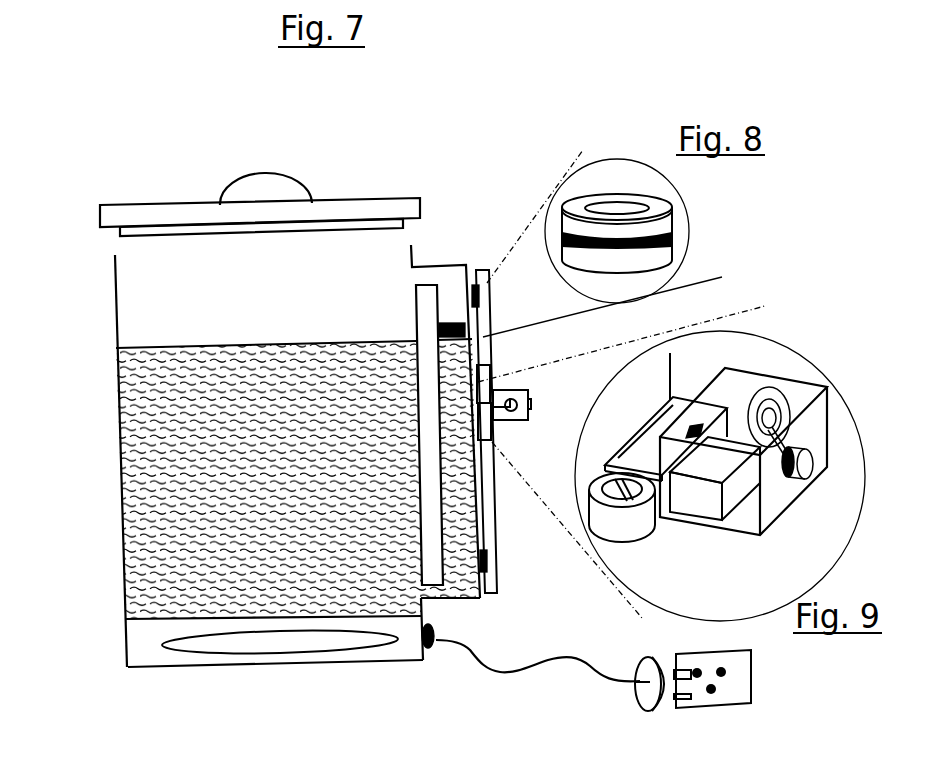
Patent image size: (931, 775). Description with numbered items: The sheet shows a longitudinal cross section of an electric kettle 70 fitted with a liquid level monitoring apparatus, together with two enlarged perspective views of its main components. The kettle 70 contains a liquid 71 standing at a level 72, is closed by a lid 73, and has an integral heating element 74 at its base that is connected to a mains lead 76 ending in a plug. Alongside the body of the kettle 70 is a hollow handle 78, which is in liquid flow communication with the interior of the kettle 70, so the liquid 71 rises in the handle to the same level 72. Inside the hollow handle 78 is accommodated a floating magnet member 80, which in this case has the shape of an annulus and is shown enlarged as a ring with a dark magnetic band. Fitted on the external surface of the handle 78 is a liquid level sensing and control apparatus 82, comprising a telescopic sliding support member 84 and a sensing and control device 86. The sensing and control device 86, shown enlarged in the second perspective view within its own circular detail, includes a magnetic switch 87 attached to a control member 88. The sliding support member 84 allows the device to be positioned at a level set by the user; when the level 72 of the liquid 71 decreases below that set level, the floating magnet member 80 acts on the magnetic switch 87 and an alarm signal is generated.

In FIG. 7, the electric kettle 70 is at (110, 490).
In FIG. 7, the liquid 71 is at (148, 418).
In FIG. 7, the level 72 is at (162, 345).
In FIG. 7, the lid 73 is at (158, 200).
In FIG. 7, the integral heating element 74 is at (263, 655).
In FIG. 7, the mains lead 76 is at (520, 678).
In FIG. 7, the hollow handle 78 is at (438, 253).
In FIG. 7, the floating magnet member 80 is at (479, 428).
In FIG. 8, the floating magnet member 80 is at (685, 227).
In FIG. 7, the liquid level sensing and control apparatus 82 is at (505, 521).
In FIG. 7, the telescopic sliding support member 84 is at (498, 578).
In FIG. 7, the sensing and control device 86 is at (535, 393).
In FIG. 9, the sensing and control device 86 is at (749, 440).
In FIG. 9, the magnetic switch 87 is at (672, 428).
In FIG. 9, the control member 88 is at (688, 500).